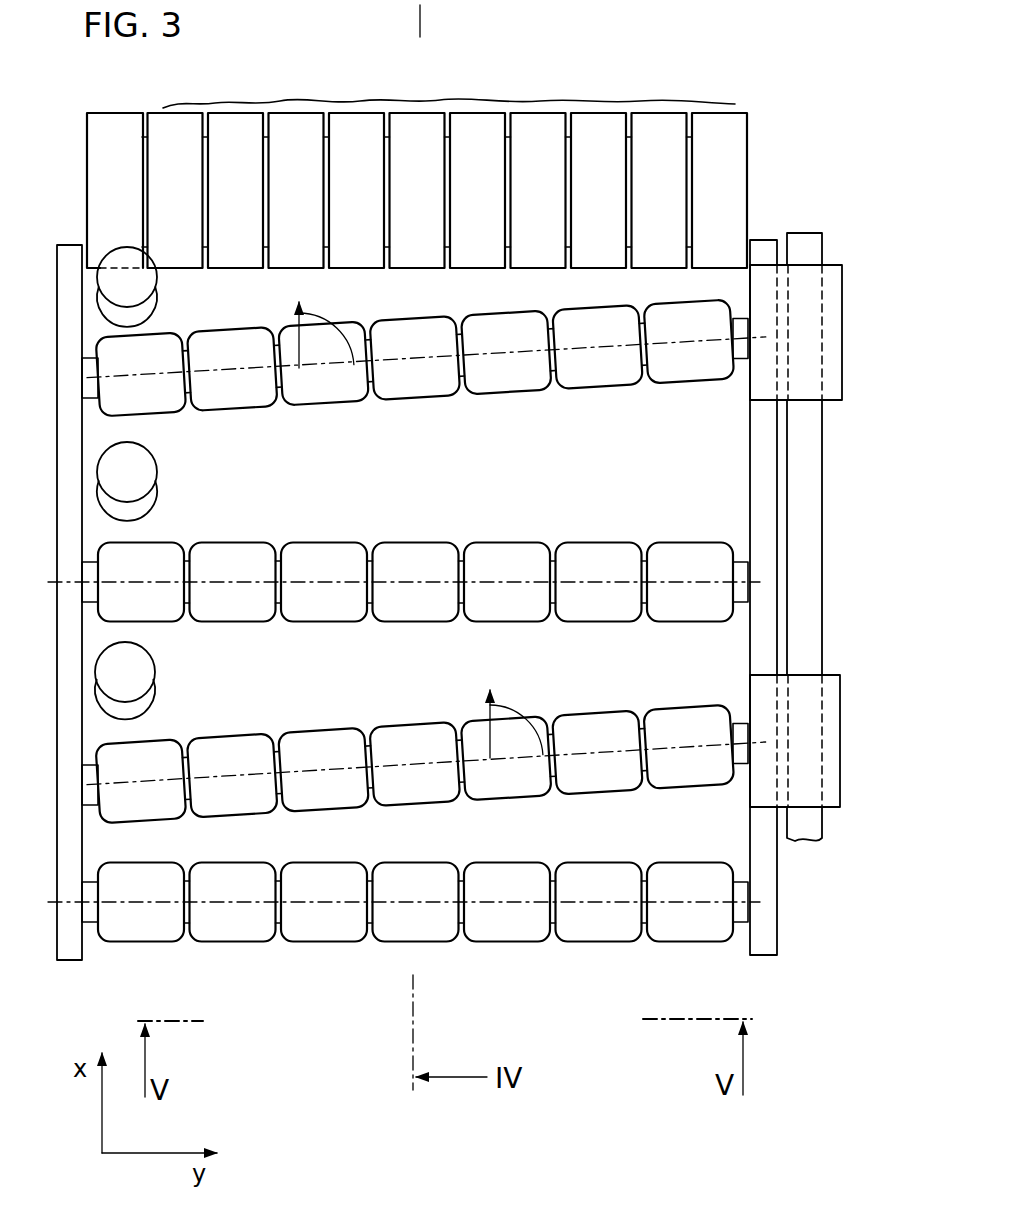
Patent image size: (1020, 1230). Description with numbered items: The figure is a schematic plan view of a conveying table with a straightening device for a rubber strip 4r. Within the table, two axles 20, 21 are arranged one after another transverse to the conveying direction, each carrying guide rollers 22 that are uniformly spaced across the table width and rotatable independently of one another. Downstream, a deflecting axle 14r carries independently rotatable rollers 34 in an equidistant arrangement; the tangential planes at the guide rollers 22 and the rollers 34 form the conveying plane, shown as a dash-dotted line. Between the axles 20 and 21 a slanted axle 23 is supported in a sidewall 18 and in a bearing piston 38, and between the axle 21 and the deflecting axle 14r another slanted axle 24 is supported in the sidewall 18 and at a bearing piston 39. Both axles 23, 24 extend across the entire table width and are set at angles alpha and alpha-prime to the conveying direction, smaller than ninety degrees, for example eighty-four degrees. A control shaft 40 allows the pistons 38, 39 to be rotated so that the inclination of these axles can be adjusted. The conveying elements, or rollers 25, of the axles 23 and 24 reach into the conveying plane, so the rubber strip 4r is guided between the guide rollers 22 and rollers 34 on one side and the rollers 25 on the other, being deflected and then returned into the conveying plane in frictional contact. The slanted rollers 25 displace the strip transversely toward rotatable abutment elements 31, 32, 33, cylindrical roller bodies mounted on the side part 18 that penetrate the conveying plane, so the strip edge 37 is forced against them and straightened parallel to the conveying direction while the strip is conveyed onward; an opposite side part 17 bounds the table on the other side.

The rubber strip 4r is at (190, 107).
The deflecting axle 14r is at (455, 155).
The right support bracket 17 is at (763, 941).
The sidewall 18 is at (70, 947).
The axle 20 is at (740, 908).
The axle 21 is at (742, 568).
The guide rollers 22 is at (320, 548).
The axle 23 is at (740, 755).
The axle 24 is at (743, 358).
The conveying elements (rollers) 25 is at (417, 395).
The abutment element 31 is at (108, 667).
The abutment element 32 is at (112, 472).
The abutment element 33 is at (118, 283).
The rollers 34 is at (475, 122).
The edge 37 is at (163, 108).
The bearing piston 38 is at (822, 712).
The bearing piston 39 is at (827, 297).
The control shaft 40 is at (806, 461).